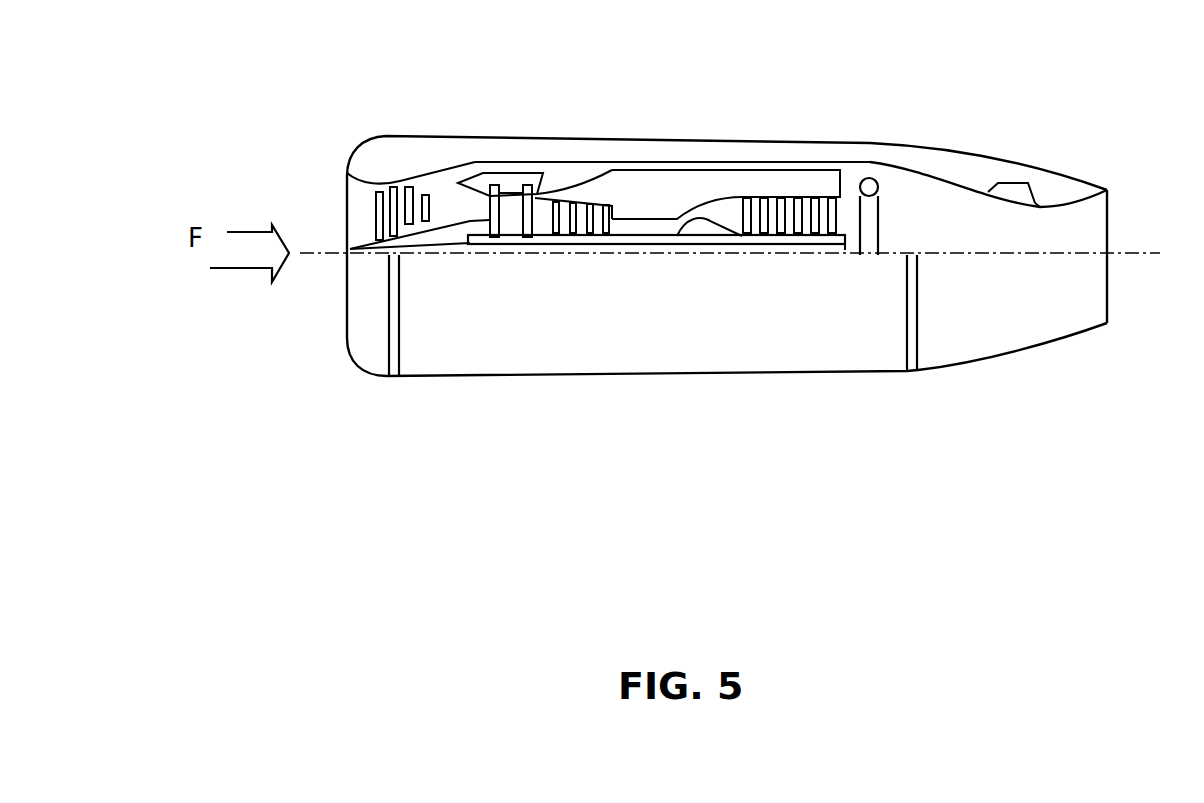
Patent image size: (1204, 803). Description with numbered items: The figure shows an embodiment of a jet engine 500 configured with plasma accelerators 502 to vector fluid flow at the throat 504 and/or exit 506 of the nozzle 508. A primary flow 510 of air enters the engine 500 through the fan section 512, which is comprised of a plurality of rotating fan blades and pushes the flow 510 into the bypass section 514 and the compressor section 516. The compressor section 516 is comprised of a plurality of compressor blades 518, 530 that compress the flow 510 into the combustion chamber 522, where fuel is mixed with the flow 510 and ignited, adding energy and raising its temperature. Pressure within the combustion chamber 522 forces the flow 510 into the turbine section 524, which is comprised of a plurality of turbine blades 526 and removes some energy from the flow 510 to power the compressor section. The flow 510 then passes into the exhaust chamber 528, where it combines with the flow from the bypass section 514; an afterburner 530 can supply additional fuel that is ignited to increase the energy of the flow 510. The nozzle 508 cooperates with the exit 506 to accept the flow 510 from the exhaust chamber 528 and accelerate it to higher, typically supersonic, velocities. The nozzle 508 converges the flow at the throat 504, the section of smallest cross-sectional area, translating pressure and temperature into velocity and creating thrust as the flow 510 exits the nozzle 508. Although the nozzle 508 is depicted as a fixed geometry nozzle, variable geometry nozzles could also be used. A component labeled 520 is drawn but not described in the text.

The engine 500 is at (1002, 78).
The plasma accelerators 502 is at (1013, 183).
The throat 504 is at (1040, 203).
The exit 506 is at (1113, 228).
The nozzle 508 is at (730, 269).
The primary flow 510 is at (248, 220).
The fan section 512 is at (386, 185).
The bypass section 514 is at (470, 173).
The compressor section 516 is at (481, 202).
The compressor blades 518 is at (565, 198).
The combustor 520 is at (598, 203).
The combustion chamber 522 is at (680, 215).
The turbine section 524 is at (731, 245).
The turbine blades 526 is at (837, 245).
The exhaust chamber 528 is at (852, 200).
The afterburner 530 is at (887, 200).